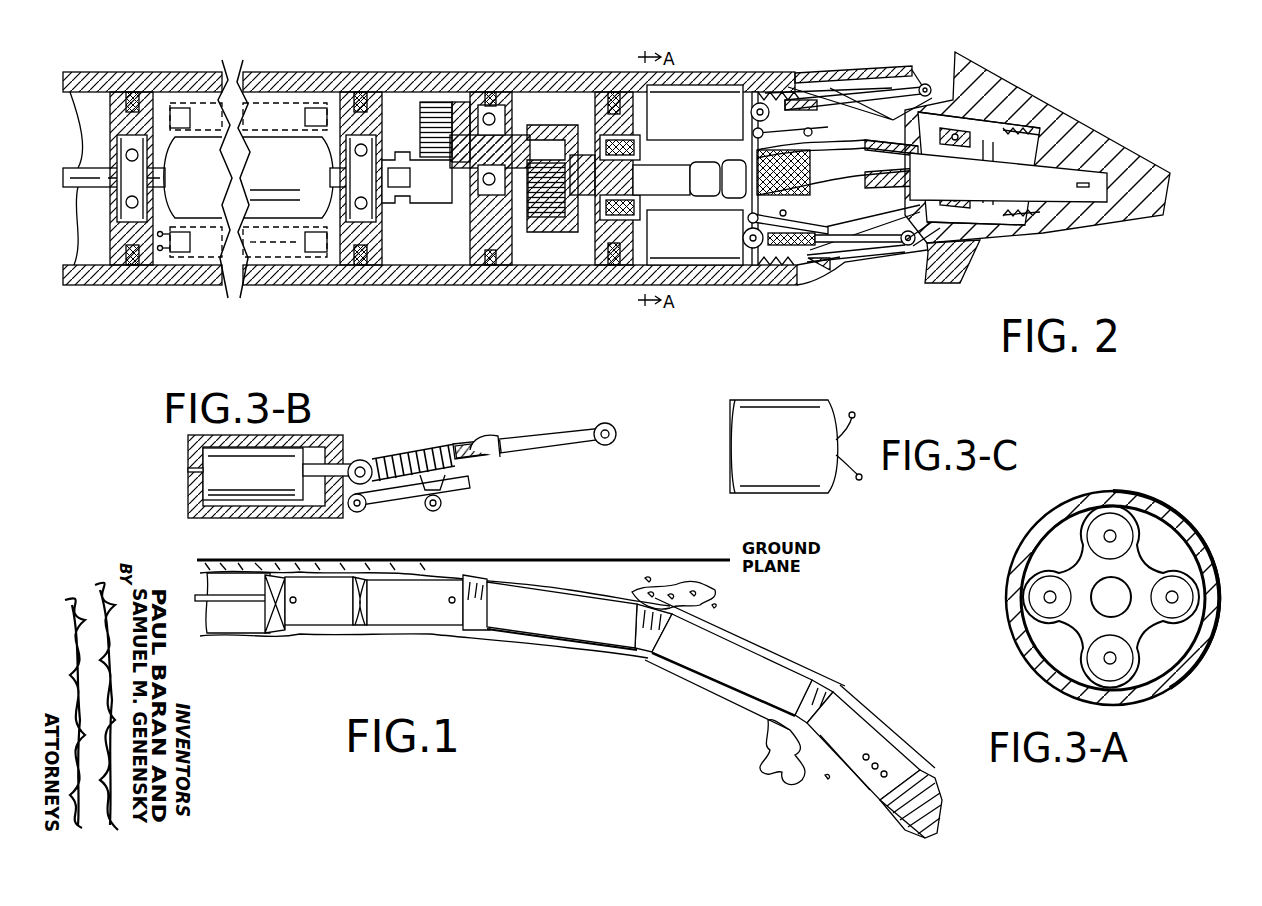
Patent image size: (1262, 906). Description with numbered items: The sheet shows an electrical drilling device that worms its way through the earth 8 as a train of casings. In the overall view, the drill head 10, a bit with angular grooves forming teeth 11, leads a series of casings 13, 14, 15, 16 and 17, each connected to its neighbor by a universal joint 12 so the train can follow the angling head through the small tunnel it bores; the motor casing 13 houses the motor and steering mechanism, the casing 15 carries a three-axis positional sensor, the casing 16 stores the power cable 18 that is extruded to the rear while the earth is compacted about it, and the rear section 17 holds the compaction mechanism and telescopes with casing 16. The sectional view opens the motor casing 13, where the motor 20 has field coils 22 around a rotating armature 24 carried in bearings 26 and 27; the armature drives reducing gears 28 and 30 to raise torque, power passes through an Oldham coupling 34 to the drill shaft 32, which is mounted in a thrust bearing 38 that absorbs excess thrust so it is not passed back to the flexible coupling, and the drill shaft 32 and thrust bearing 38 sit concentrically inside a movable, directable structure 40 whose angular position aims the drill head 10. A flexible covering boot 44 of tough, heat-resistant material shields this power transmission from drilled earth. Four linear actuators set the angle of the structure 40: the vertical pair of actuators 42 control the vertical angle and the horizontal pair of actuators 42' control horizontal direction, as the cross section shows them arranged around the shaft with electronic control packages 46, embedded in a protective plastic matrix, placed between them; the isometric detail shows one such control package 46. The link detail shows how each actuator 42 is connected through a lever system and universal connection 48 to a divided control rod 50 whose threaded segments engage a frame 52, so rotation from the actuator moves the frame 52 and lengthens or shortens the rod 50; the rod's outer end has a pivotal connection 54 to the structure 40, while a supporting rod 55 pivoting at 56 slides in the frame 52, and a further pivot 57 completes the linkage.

In FIG. 1, the earth 8 is at (620, 560).
In FIG. 2, the drill head 10 is at (1118, 222).
In FIG. 1, the drill head 10 is at (934, 805).
In FIG. 1, the teeth 11 is at (890, 822).
In FIG. 1, the universal joint 12 is at (468, 632).
In FIG. 1, the motor casing 13 is at (858, 782).
In FIG. 1, the casing 14 is at (550, 636).
In FIG. 1, the casing 15 is at (745, 688).
In FIG. 1, the casing 16 is at (412, 627).
In FIG. 1, the rear section 17 is at (322, 627).
In FIG. 1, the power cable 18 is at (230, 605).
In FIG. 2, the motor 20 is at (302, 243).
In FIG. 2, the field coils 22 is at (275, 248).
In FIG. 2, the armature 24 is at (296, 174).
In FIG. 2, the bearing 26 is at (130, 222).
In FIG. 2, the bearing 27 is at (382, 215).
In FIG. 2, the reducing gear 28 is at (512, 150).
In FIG. 2, the reducing gear 30 is at (585, 195).
In FIG. 2, the drill shaft 32 is at (962, 186).
In FIG. 2, the Oldham coupling 34 is at (805, 168).
In FIG. 2, the thrust bearing 38 is at (962, 266).
In FIG. 2, the directable structure 40 is at (975, 110).
In FIG. 2, the actuator 42 is at (704, 178).
In FIG. 3B, the actuator 42 is at (250, 476).
In FIG. 3A, the actuator 42 is at (1136, 580).
In FIG. 3A, the actuator 42' is at (1109, 618).
In FIG. 2, the flexible covering boot 44 is at (838, 72).
In FIG. 3C, the electronic control package 46 is at (862, 448).
In FIG. 3A, the electronic control package 46 is at (1068, 530).
In FIG. 2, the universal connection 48 is at (762, 262).
In FIG. 3B, the universal connection 48 is at (362, 460).
In FIG. 2, the control rod 50 is at (832, 245).
In FIG. 3B, the control rod 50 is at (590, 440).
In FIG. 3B, the frame 52 is at (498, 452).
In FIG. 3B, the pivotal connection 54 is at (606, 424).
In FIG. 3B, the supporting rod 55 is at (468, 488).
In FIG. 3B, the pivot 56 is at (366, 508).
In FIG. 3B, the pivot 57 is at (440, 508).